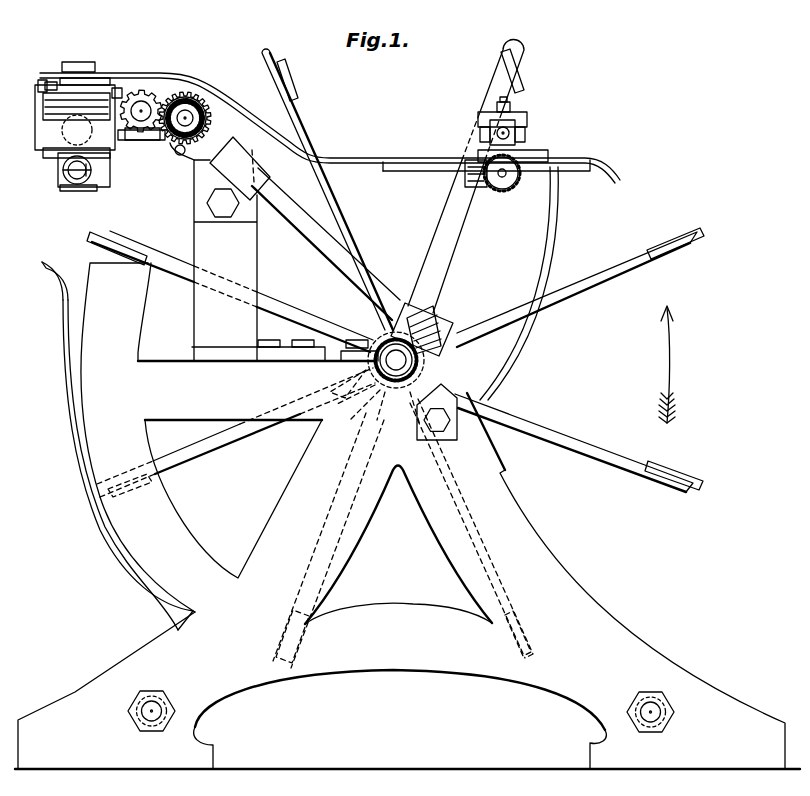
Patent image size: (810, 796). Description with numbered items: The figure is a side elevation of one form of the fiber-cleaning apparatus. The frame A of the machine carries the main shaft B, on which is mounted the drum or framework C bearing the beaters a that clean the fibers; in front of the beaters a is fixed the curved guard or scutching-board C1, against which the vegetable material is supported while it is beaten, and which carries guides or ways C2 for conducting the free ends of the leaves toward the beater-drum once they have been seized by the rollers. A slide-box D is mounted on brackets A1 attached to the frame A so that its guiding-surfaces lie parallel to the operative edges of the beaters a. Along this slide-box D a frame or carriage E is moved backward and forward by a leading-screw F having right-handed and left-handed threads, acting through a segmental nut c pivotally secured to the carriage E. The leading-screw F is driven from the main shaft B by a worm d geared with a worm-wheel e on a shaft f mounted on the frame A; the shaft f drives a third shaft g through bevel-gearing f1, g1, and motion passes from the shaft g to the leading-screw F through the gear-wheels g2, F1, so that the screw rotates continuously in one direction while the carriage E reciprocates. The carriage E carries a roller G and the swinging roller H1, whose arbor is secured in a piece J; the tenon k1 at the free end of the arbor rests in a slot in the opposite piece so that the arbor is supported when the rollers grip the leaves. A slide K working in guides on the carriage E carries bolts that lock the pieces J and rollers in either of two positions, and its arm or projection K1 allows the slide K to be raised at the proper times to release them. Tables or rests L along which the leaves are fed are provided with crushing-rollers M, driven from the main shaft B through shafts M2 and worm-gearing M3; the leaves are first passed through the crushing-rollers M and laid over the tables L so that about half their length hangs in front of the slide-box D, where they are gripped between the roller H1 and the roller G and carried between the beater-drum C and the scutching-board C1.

The frame A is at (407, 464).
The brackets A1 is at (154, 62).
The beaters a is at (110, 236).
The main shaft B is at (396, 386).
The drum or framework C is at (272, 308).
The segmental nut c is at (119, 90).
The curved guard, shield, or scutching-board C1 is at (62, 377).
The guides or ways C2 is at (48, 264).
The slide-box D is at (43, 106).
The worm d is at (366, 392).
The frame or carriage E is at (35, 135).
The worm-wheel e is at (432, 320).
The leading-screw F is at (138, 130).
The gear-wheel F1 is at (145, 134).
The shaft f is at (303, 232).
The bevel-gear f1 is at (178, 150).
The roller G is at (43, 153).
The third shaft g is at (174, 95).
The bevel-gear g1 is at (188, 92).
The gear-wheel g2 is at (202, 96).
The roller H1 is at (64, 168).
The piece J is at (62, 187).
The slide K is at (38, 88).
The arm or projection K1 is at (50, 83).
The tenon k1 is at (88, 170).
The tables or rests L is at (225, 76).
The crushing-rollers M is at (517, 118).
The shafts M2 is at (447, 244).
The worm-gearing M3 is at (478, 167).